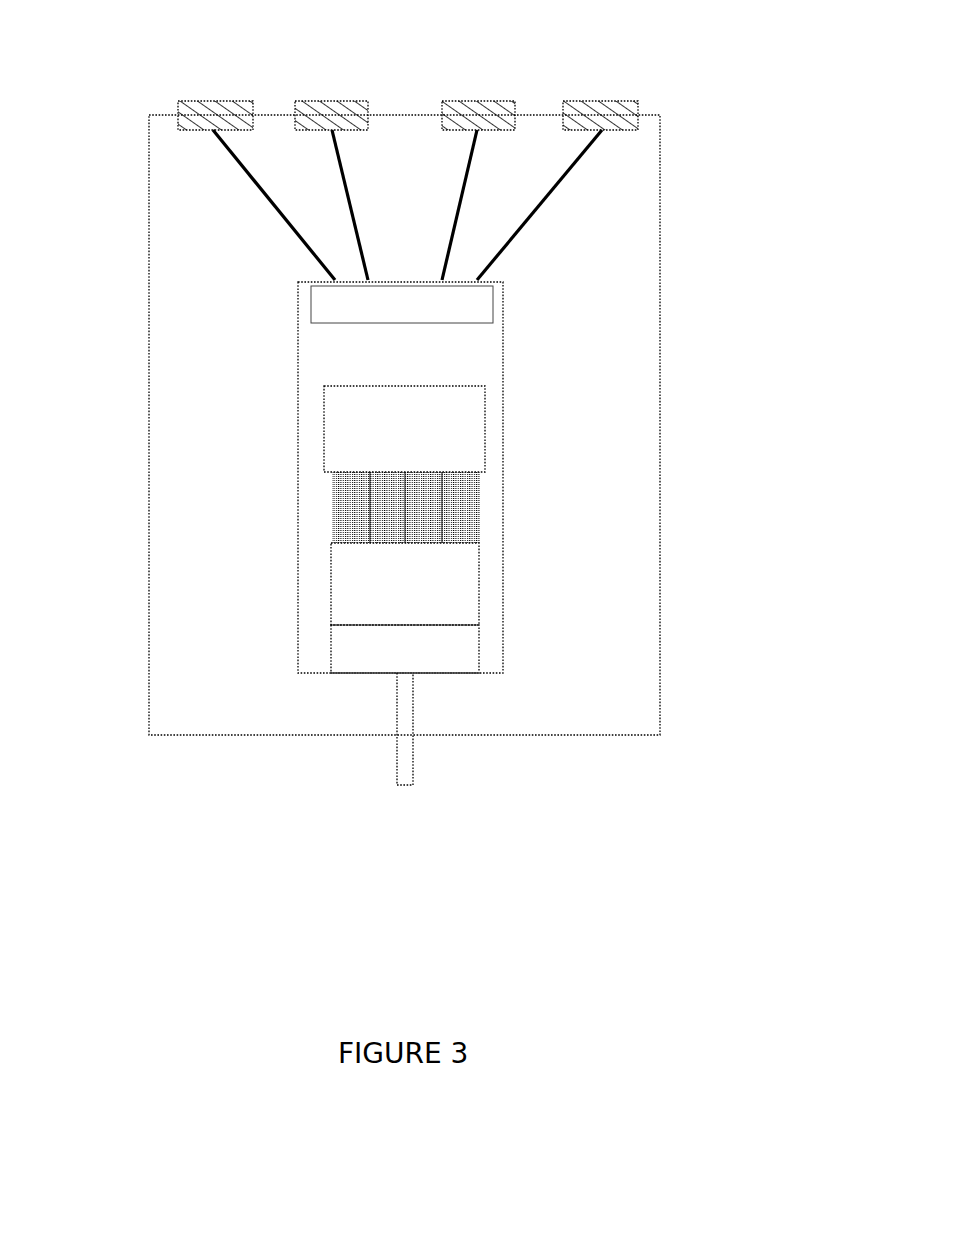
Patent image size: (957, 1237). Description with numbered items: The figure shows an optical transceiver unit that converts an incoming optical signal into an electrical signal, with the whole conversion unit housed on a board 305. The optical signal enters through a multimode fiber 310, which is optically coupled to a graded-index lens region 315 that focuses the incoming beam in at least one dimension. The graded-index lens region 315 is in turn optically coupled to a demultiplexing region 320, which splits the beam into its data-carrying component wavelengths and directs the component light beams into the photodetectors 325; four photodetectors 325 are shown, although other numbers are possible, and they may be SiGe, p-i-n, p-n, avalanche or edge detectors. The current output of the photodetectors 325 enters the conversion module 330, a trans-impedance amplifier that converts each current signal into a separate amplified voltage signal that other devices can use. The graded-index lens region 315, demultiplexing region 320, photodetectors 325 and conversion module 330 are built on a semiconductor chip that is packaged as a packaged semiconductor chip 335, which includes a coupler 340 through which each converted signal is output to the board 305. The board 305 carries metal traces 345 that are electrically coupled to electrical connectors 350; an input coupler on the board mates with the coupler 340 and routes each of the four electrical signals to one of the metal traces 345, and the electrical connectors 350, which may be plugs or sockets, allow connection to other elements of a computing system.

The board 305 is at (660, 462).
The multimode fiber 310 is at (413, 765).
The graded-index lens region 315 is at (405, 649).
The demultiplexing region 320 is at (405, 584).
The photodetectors 325 is at (331, 507).
The conversion module 330 is at (404, 429).
The packaged semiconductor chip 335 is at (298, 380).
The coupler 340 is at (311, 308).
The metal traces 345 is at (545, 200).
The electrical connectors 350 is at (622, 100).